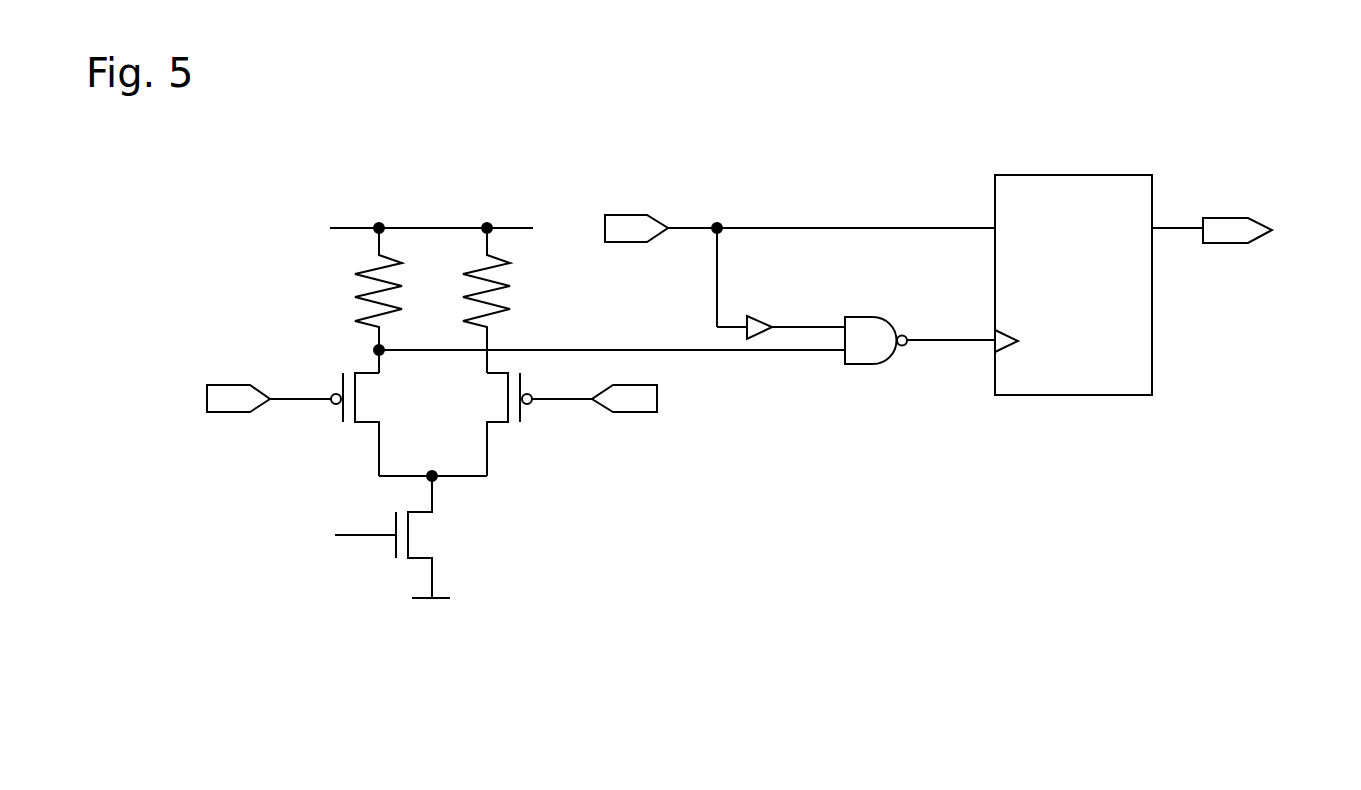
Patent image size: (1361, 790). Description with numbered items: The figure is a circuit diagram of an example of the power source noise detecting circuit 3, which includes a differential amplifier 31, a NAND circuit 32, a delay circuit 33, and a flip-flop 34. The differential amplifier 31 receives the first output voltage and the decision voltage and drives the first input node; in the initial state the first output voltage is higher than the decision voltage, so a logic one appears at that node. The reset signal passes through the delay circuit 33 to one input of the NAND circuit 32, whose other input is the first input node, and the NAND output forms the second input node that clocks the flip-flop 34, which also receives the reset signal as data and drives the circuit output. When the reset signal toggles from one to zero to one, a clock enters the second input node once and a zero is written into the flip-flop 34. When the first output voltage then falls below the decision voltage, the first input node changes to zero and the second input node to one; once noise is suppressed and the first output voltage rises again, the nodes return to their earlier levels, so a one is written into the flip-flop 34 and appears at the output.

The power source noise detecting circuit 3 is at (1215, 720).
The differential amplifier 31 is at (497, 505).
The NAND circuit 32 is at (867, 364).
The delay circuit 33 is at (764, 318).
The flip-flop 34 is at (1133, 395).